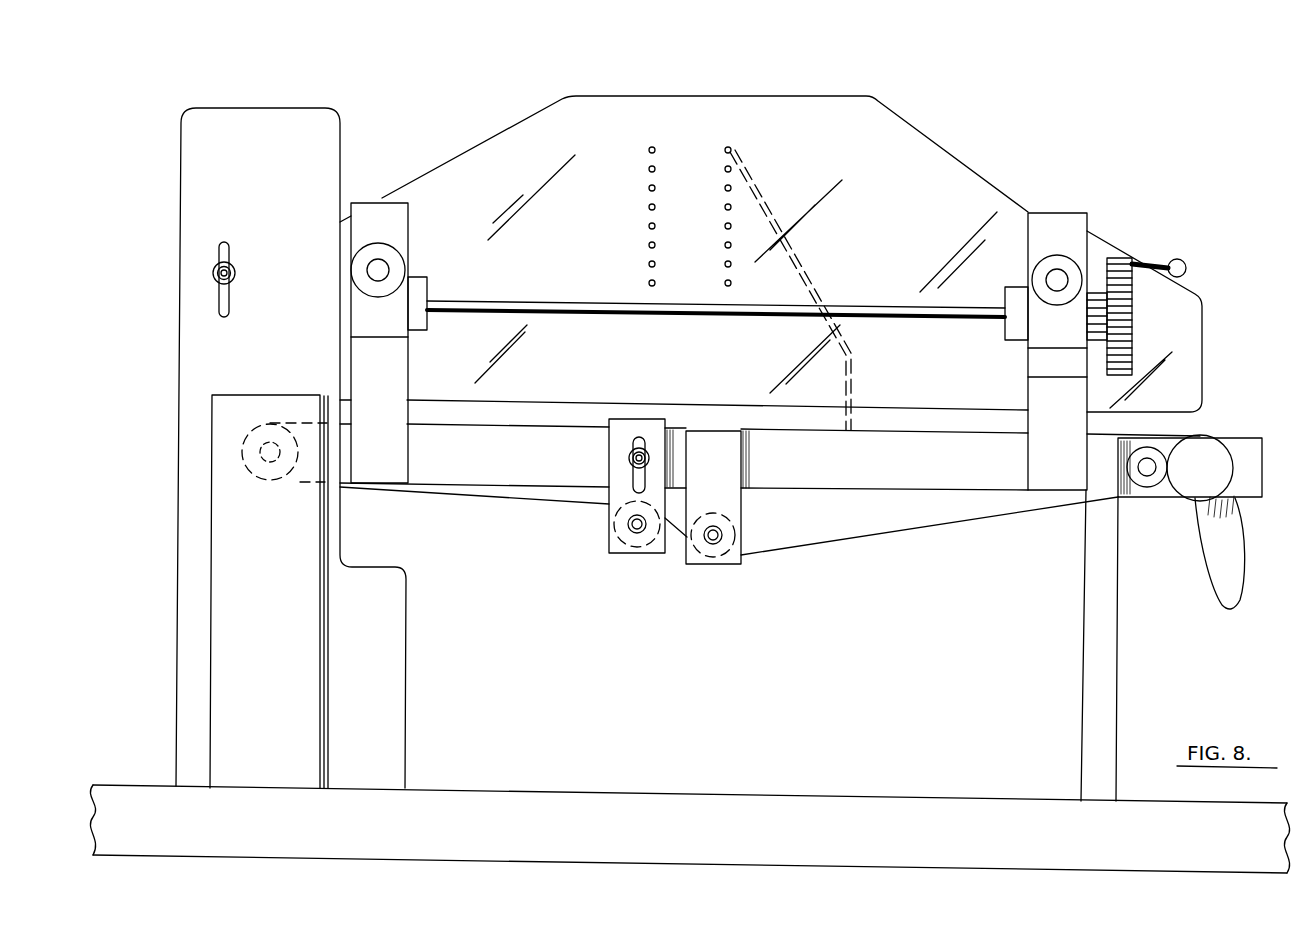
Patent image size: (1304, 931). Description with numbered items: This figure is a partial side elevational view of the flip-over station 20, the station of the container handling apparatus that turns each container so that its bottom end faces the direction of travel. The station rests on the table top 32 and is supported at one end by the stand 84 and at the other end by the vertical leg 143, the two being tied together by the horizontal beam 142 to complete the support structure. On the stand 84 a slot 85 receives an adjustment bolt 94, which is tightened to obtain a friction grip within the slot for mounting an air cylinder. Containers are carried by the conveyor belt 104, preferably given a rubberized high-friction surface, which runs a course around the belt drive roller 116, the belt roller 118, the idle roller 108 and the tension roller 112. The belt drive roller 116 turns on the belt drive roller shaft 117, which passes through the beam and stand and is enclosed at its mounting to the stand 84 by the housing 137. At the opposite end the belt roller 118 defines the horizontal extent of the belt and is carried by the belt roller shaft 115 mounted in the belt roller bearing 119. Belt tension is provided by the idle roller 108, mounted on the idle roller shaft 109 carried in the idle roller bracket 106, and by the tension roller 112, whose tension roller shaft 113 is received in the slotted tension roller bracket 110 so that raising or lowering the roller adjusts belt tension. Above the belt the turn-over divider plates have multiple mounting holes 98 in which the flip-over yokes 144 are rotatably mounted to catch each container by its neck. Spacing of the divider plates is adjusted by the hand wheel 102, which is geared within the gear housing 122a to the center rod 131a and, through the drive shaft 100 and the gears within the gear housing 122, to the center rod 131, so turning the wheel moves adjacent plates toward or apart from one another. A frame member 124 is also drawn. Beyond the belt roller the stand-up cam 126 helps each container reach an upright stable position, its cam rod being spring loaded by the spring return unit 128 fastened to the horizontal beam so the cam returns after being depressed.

The flip-over station 20 is at (735, 66).
The table top 32 is at (770, 820).
The stand 84 is at (228, 336).
The slot 85 is at (222, 250).
The adjustment bolt 94 is at (213, 273).
The mounting holes 98 is at (648, 146).
The drive shaft 100 is at (522, 305).
The hand wheel 102 is at (1118, 317).
The conveyor belt 104 is at (935, 530).
The idle roller bracket 106 is at (729, 555).
The idle roller 108 is at (720, 535).
The idle roller shaft 109 is at (713, 541).
The tension roller bracket 110 is at (618, 548).
The tension roller 112 is at (636, 524).
The tension roller shaft 113 is at (637, 530).
The belt roller shaft 115 is at (1149, 473).
The belt drive roller 116 is at (278, 470).
The belt drive roller shaft 117 is at (262, 465).
The belt roller 118 is at (1165, 440).
The belt roller bearing 119 is at (1143, 472).
The gear housing 122 is at (376, 215).
The gear housing 122a is at (1062, 225).
The frame bar 124 is at (383, 452).
The stand-up cam 126 is at (1230, 580).
The spring return unit 128 is at (1208, 476).
The center rod 131 is at (382, 270).
The center rod 131a is at (1055, 280).
The housing 137 is at (280, 705).
The horizontal beam 142 is at (502, 470).
The vertical leg 143 is at (1100, 667).
The flip-over yoke 144 is at (852, 372).